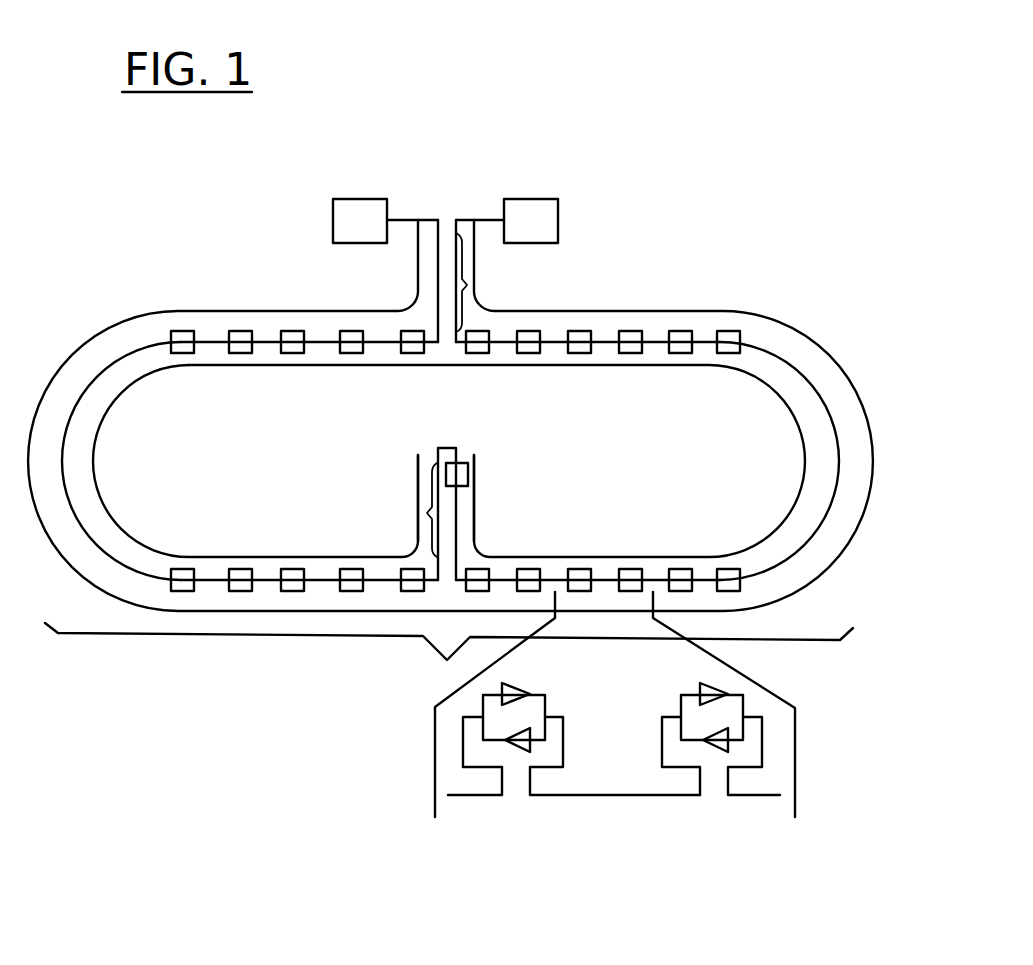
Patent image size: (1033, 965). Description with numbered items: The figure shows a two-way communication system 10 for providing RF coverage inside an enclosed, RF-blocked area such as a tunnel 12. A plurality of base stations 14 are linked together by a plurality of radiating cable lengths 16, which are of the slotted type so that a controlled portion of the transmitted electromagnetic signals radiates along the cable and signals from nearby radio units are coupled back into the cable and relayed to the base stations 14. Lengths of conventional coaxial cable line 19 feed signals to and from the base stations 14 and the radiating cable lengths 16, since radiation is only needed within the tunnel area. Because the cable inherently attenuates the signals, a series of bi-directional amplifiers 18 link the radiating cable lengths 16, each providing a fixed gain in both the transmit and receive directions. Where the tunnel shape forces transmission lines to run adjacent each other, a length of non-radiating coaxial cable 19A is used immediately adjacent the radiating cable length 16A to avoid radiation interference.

The two-way communication system 10 is at (516, 146).
The tunnel 12 is at (449, 656).
The base stations 14 is at (558, 221).
The radiating cable lengths 16 is at (603, 795).
The radiating cable length 16A is at (458, 513).
The amplifiers 18 is at (567, 699).
The coaxial cable line 19 is at (467, 285).
The non-radiating coaxial cable 19A is at (427, 512).